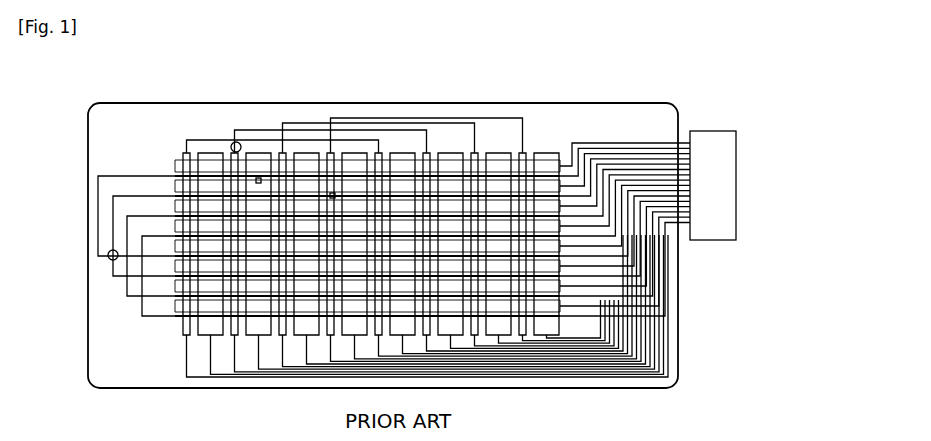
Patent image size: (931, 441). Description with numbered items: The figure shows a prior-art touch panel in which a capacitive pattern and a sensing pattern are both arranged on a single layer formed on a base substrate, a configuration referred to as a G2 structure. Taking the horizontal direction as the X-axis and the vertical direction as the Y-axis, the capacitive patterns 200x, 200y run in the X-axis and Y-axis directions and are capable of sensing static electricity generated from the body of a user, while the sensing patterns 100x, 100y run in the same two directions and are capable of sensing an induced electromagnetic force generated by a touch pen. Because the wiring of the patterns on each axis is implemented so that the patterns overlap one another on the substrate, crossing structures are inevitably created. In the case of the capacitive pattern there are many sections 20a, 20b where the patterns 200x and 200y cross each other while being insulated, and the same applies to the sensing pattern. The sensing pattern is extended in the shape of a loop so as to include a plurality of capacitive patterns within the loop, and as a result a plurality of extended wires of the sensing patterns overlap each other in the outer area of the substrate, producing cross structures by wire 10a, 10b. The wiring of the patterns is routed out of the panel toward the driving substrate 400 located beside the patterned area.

The sensing pattern 100y is at (183, 159).
The sensing pattern 100x is at (181, 320).
The capacitive pattern 200y is at (498, 152).
The capacitive pattern 200x is at (170, 162).
The cross structure by wire 10a is at (107, 260).
The cross structure by wire 10b is at (233, 145).
The cross structure by pattern 20a is at (258, 178).
The cross structure by pattern 20b is at (333, 193).
The driving substrate 400 is at (710, 131).